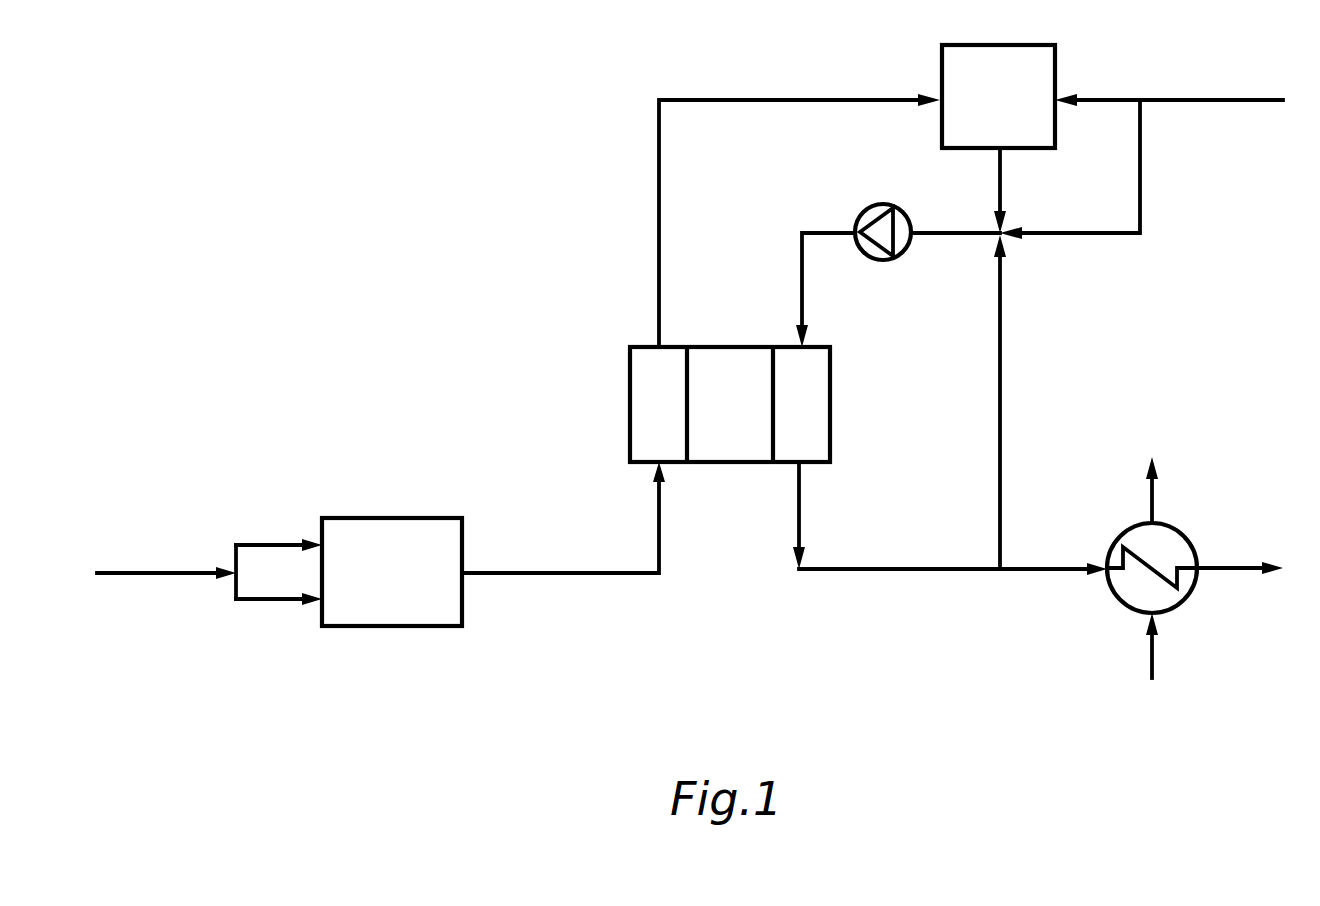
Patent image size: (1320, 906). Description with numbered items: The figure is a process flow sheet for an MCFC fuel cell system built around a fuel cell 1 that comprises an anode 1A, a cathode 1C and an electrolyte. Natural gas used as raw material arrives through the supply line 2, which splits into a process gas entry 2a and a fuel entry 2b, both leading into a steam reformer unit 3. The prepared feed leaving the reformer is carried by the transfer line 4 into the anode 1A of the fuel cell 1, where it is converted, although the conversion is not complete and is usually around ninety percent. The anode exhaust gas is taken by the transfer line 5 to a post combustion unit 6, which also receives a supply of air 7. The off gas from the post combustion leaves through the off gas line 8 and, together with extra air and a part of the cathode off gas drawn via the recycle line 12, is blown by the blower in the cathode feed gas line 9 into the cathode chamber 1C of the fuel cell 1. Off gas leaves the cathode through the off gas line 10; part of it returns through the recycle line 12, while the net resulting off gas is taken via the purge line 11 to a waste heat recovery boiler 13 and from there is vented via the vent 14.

The fuel cell 1 is at (740, 345).
The anode 1A is at (672, 424).
The cathode 1C is at (817, 424).
The supply line of natural gas 2 is at (176, 578).
The process gas entry 2a is at (283, 541).
The fuel entry 2b is at (293, 603).
The steam reformer unit 3 is at (400, 517).
The transfer line of prepared feed 4 is at (555, 571).
The transfer line of anode exhaust gas 5 is at (800, 98).
The post combustion unit 6 is at (1008, 118).
The supply of air 7 is at (1193, 98).
The off gas line from the post combustion 8 is at (1004, 192).
The feed gas line to the cathode with a blower 9 is at (806, 302).
The off gas line from the cathode 10 is at (915, 567).
The purge line 11 is at (1060, 568).
The line for recycling cathode off-gas 12 is at (1003, 418).
The waste heat recovery boiler 13 is at (1178, 532).
The vent 14 is at (1232, 561).